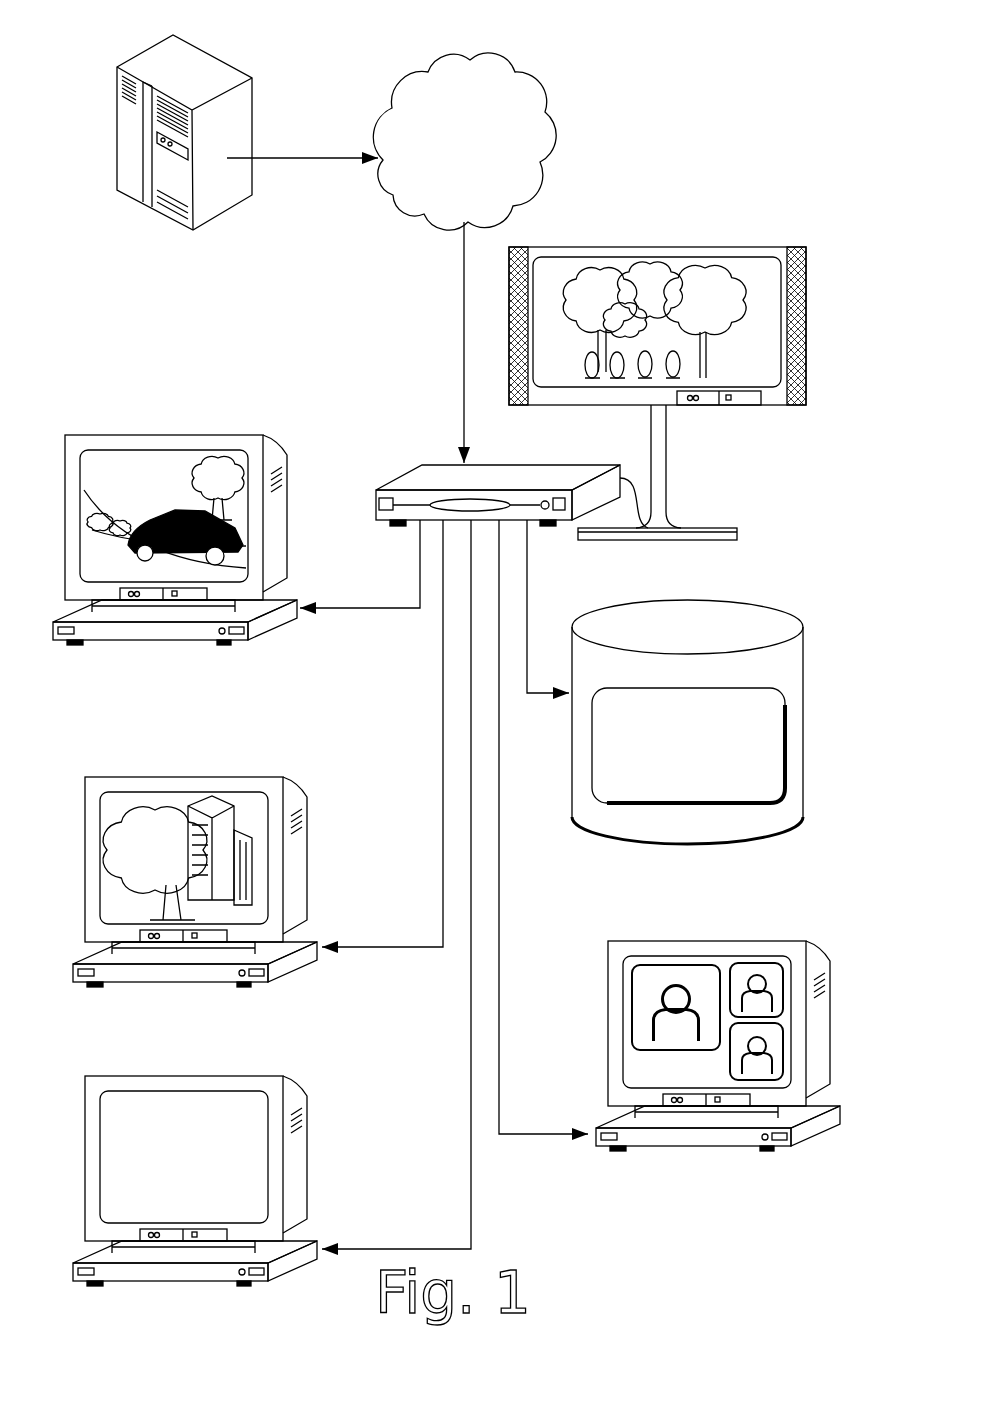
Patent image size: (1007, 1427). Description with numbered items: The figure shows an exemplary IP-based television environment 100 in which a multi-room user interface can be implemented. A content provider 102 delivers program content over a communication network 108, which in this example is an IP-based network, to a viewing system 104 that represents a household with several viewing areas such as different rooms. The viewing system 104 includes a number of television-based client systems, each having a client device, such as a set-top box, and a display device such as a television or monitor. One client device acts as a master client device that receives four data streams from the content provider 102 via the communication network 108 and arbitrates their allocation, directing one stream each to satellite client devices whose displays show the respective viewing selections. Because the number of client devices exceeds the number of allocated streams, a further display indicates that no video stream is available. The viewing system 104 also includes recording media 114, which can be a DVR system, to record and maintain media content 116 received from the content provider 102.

The IP-based television (IPTV) environment 100 is at (643, 117).
The content provider 102 is at (236, 166).
The viewing system 104 is at (410, 357).
The communication network 108 is at (464, 141).
The recording media 114 is at (687, 722).
The media content 116 is at (688, 745).